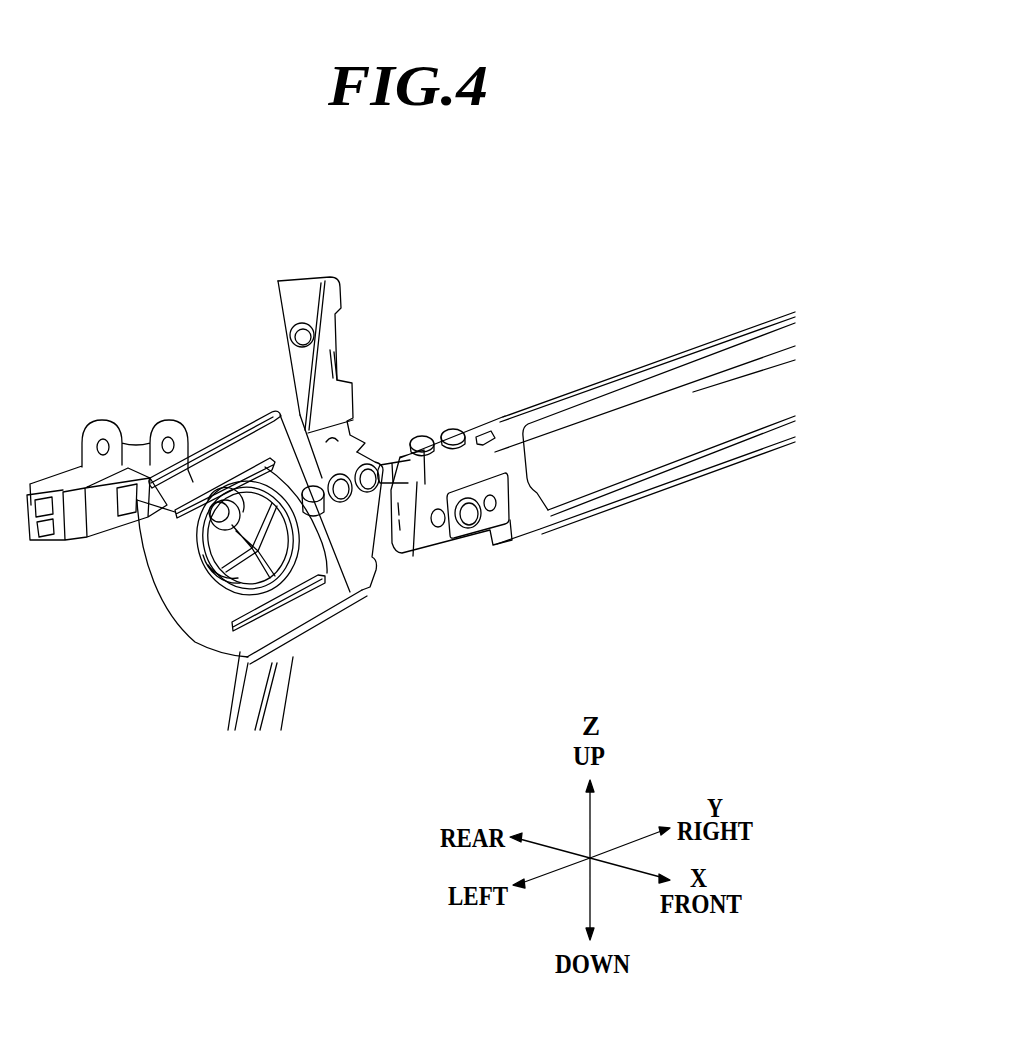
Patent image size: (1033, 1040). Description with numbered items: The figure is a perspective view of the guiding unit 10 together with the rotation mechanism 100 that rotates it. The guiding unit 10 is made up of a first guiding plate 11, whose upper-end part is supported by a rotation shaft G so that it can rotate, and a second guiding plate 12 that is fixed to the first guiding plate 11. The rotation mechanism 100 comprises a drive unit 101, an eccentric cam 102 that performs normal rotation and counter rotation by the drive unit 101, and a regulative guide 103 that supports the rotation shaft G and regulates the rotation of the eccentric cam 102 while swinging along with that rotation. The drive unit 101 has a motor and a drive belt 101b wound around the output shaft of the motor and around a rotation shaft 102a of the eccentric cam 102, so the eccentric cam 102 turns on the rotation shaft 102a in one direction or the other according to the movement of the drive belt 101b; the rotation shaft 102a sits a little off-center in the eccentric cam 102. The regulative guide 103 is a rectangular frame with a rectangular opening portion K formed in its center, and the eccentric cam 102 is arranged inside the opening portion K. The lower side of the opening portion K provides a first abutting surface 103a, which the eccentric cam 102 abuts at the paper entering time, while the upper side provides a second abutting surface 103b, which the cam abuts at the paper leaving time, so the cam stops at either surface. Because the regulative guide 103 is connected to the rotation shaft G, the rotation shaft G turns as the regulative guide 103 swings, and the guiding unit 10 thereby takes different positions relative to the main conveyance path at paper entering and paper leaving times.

The guiding unit 10 is at (724, 326).
The first guiding plate 11 is at (507, 460).
The second guiding plate 12 is at (615, 438).
The rotation mechanism 100 is at (328, 258).
The drive unit 101 is at (178, 704).
The drive belt 101b is at (240, 713).
The eccentric cam 102 is at (177, 538).
The rotation shaft 102a is at (220, 521).
The regulative guide 103 is at (352, 583).
The first abutting surface 103a is at (318, 577).
The second abutting surface 103b is at (200, 498).
The rotation shaft G is at (400, 470).
The opening portion K is at (267, 460).